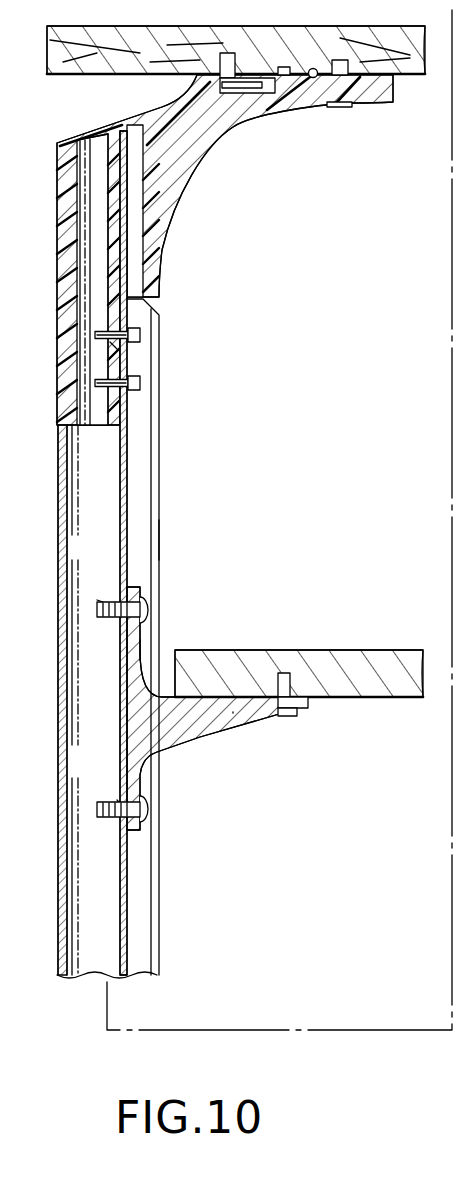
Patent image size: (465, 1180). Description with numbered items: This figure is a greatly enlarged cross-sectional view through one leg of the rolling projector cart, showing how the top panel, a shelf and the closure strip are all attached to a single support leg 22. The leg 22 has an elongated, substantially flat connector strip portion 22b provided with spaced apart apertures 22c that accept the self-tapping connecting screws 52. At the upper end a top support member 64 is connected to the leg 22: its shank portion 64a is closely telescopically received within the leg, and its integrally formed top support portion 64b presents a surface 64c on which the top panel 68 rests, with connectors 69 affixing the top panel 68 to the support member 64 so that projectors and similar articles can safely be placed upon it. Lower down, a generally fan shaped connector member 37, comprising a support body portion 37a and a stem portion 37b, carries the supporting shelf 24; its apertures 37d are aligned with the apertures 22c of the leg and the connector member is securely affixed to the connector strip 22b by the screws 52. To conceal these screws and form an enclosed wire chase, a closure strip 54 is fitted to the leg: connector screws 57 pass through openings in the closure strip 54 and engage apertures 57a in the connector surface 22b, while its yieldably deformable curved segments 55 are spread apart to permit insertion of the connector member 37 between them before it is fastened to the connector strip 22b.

The top panel 68 is at (167, 65).
The top support member 64 is at (172, 207).
The shank portion 64a is at (118, 413).
The top support portion 64b is at (58, 187).
The surface 64c is at (316, 80).
The connectors 69 is at (343, 107).
The support member (leg) 22 is at (58, 898).
The connector strip portion 22b is at (127, 465).
The apertures 22c is at (103, 600).
The curved segments 55 is at (159, 497).
The closure strip 54 is at (159, 540).
The connector screws 57 is at (140, 332).
The apertures 57a is at (118, 350).
The supporting shelf (article support structure) 24 is at (387, 660).
The connector member 37 is at (262, 727).
The support body portion 37a is at (233, 712).
The stem portion 37b is at (133, 710).
The apertures 37d is at (148, 607).
The self-tapping connecting screws 52 is at (100, 610).